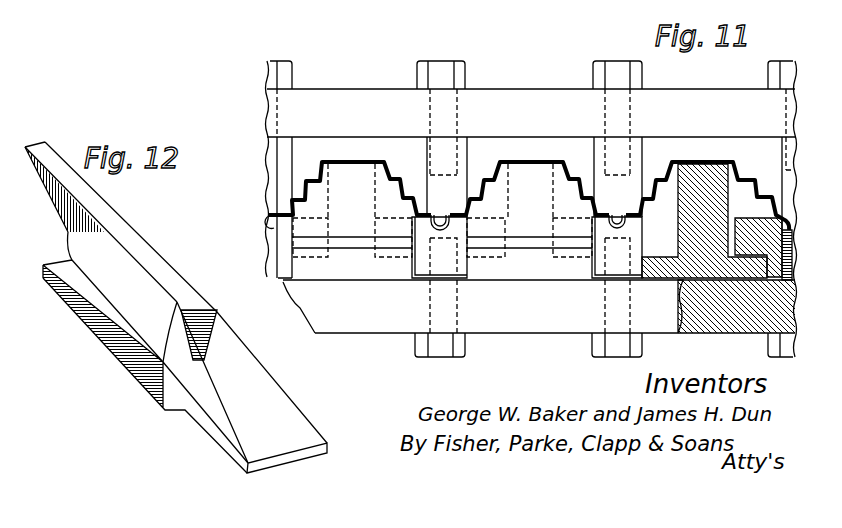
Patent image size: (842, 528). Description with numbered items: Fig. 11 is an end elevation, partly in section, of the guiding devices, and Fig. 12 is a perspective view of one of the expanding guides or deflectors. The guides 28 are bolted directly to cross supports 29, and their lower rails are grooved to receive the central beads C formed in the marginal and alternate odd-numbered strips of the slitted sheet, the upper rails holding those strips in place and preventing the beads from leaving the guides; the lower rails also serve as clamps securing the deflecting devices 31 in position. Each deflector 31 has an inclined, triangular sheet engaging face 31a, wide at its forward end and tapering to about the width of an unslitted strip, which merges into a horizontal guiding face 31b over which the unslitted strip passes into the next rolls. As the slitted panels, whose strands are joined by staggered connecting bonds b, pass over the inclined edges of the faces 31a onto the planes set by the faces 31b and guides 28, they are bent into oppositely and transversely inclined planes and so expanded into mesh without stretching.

In FIG. 11, the guides 28 is at (422, 210).
In FIG. 11, the plate 29 is at (522, 100).
In FIG. 11, the deflecting devices 31 is at (352, 228).
In FIG. 12, the deflecting devices 31 is at (125, 265).
In FIG. 12, the inclined sheet engaging faces 31a is at (270, 393).
In FIG. 12, the horizontal guiding faces 31b is at (100, 208).
In FIG. 11, the connecting bonds b is at (410, 197).
In FIG. 11, the central beads C is at (440, 224).